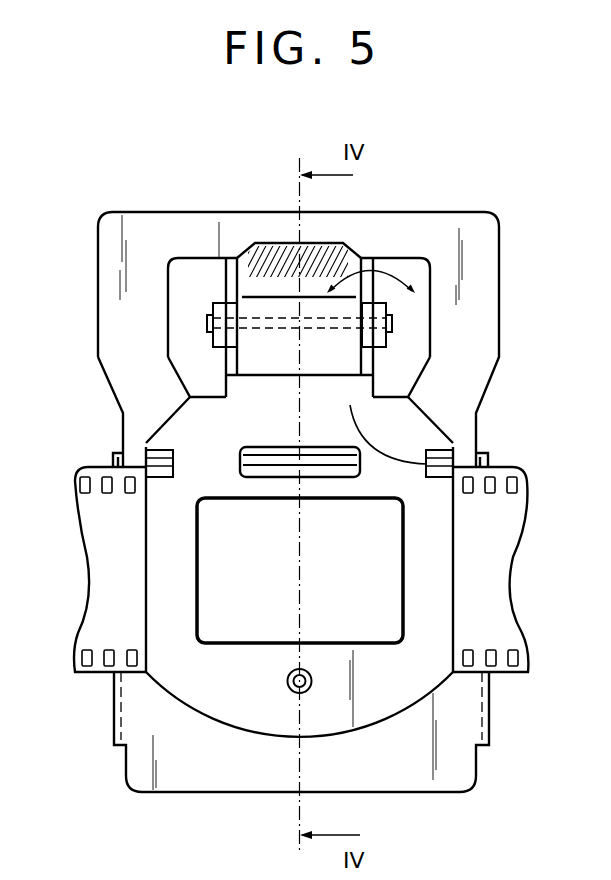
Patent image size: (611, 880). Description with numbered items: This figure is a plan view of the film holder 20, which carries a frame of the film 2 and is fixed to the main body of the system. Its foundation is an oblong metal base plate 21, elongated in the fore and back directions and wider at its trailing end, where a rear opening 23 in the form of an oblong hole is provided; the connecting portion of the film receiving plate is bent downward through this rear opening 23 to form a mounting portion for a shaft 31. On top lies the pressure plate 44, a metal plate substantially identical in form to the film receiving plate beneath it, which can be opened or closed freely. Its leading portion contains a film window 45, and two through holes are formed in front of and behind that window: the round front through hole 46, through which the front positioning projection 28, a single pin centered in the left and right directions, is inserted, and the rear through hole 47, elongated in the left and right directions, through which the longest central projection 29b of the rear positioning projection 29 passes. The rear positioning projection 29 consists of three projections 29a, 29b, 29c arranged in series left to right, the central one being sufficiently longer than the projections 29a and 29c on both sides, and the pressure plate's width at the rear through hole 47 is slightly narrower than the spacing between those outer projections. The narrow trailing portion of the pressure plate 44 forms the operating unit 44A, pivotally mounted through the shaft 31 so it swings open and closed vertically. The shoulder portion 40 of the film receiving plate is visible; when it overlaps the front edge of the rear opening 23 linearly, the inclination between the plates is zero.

The film 2 is at (103, 625).
The film holder 20 is at (497, 131).
The base plate 21 is at (482, 236).
The rear opening 23 is at (396, 258).
The front positioning projection 28 is at (309, 690).
The rear positioning projection 29 is at (299, 316).
The projection 29a is at (176, 460).
The central projection 29b is at (262, 390).
The projection 29c is at (363, 419).
The shaft 31 is at (207, 316).
The shoulder portion 40 is at (190, 396).
The pressure plate 44 is at (398, 420).
The operating unit 44A is at (270, 262).
The film window 45 is at (228, 642).
The front through hole 46 is at (292, 691).
The rear through hole 47 is at (262, 477).